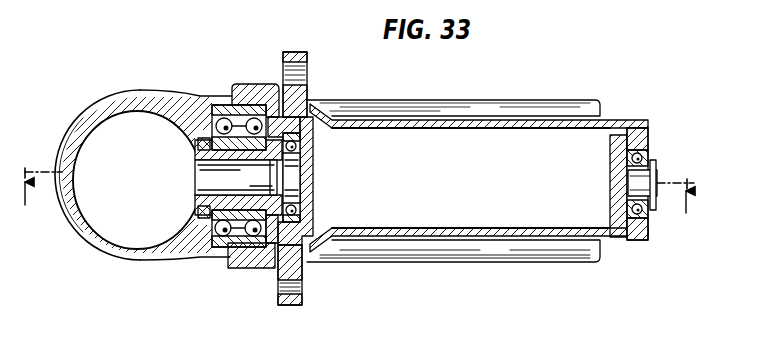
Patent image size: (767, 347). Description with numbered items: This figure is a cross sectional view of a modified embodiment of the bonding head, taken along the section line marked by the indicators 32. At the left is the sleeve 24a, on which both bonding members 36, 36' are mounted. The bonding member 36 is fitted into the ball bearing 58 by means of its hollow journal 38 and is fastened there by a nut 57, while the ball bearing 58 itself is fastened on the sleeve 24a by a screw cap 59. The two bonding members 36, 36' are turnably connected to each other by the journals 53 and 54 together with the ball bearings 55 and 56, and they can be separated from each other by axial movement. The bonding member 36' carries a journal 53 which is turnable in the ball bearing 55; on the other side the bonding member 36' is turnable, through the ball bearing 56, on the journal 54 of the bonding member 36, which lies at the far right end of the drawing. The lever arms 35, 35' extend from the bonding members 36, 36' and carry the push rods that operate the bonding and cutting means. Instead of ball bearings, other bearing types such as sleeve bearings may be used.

The sleeve 24a is at (107, 238).
The section line indicator 32 is at (361, 179).
The lever arm 35 is at (290, 289).
The lever arm 35' is at (308, 69).
The bonding member 36 is at (479, 199).
The bonding member 36' is at (453, 168).
The hollow journal 38 is at (197, 165).
The journal 53 is at (296, 174).
The journal 54 is at (648, 190).
The ball bearing 55 is at (301, 138).
The ball bearing 56 is at (641, 163).
The nut 57 is at (205, 218).
The ball bearing 58 is at (229, 246).
The screw cap 59 is at (263, 270).